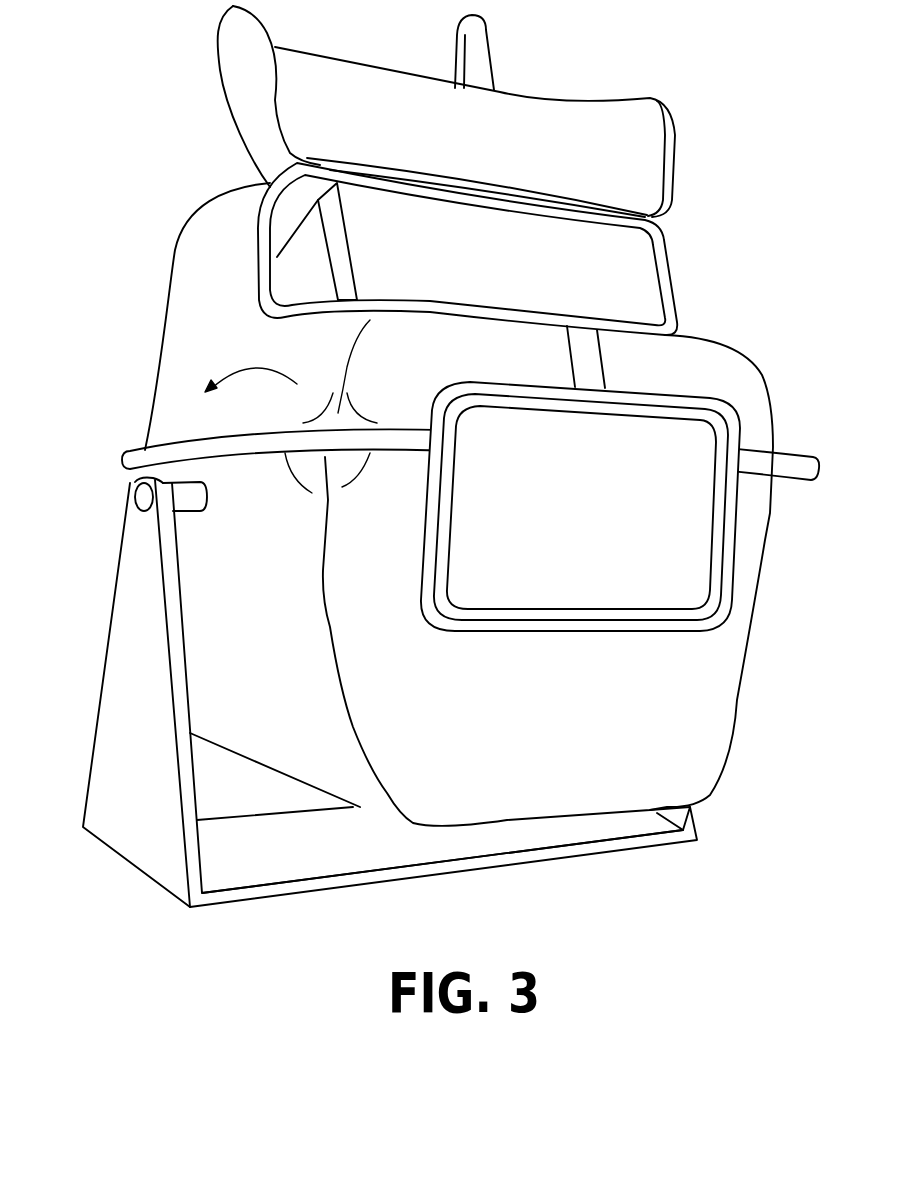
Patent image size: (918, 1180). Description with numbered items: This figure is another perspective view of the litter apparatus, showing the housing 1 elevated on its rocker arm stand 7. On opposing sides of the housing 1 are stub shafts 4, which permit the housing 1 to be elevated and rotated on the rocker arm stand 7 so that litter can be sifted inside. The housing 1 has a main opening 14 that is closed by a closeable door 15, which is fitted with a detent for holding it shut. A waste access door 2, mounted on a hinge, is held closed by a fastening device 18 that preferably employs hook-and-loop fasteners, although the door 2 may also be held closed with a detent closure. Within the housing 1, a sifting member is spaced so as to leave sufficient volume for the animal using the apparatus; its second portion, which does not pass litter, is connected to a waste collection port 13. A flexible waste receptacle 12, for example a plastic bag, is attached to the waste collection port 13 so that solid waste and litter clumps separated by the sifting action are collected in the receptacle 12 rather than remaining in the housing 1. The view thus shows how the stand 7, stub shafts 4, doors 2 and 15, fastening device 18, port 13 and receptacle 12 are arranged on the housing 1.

The housing 1 is at (167, 288).
The waste access door 2 is at (677, 150).
The stub shafts 4 is at (207, 503).
The rocker arm stand 7 is at (102, 690).
The flexible waste receptacle 12 is at (627, 250).
The waste collection port 13 is at (350, 250).
The main opening 14 is at (597, 505).
The closeable door 15 is at (463, 473).
The fastening device 18 is at (487, 32).